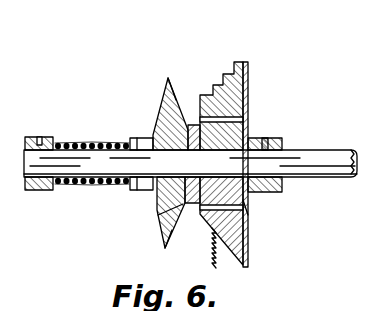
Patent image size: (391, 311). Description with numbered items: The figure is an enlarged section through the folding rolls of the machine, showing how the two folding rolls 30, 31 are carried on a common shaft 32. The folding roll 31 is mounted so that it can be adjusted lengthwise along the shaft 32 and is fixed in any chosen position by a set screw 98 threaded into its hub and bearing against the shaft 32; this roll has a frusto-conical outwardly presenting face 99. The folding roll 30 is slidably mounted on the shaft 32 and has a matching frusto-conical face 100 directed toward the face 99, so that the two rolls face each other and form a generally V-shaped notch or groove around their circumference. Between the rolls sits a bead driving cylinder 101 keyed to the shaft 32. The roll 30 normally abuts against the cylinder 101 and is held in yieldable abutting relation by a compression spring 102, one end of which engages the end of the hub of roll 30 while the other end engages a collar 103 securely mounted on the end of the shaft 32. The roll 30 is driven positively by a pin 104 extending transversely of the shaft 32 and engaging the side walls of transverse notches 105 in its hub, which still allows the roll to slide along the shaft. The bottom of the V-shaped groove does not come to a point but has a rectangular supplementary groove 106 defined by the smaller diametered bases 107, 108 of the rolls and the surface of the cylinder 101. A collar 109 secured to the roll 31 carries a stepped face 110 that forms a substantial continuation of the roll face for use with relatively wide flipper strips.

The folding roll 30 is at (160, 112).
The folding roll 31 is at (216, 110).
The shaft 32 is at (333, 159).
The set screw 98 is at (263, 138).
The frusto-conical outwardly presenting face 99 is at (210, 88).
The frusto-conical face 100 is at (178, 84).
The bead driving cylinder 101 is at (192, 204).
The compression spring 102 is at (84, 142).
The collar 103 is at (44, 190).
The pin 104 is at (137, 191).
The transverse notches 105 is at (145, 137).
The supplementary groove 106 is at (192, 124).
The smaller diametered base 107 is at (160, 228).
The smaller diametered base 108 is at (250, 204).
The collar 109 is at (250, 241).
The stepped face 110 is at (245, 60).